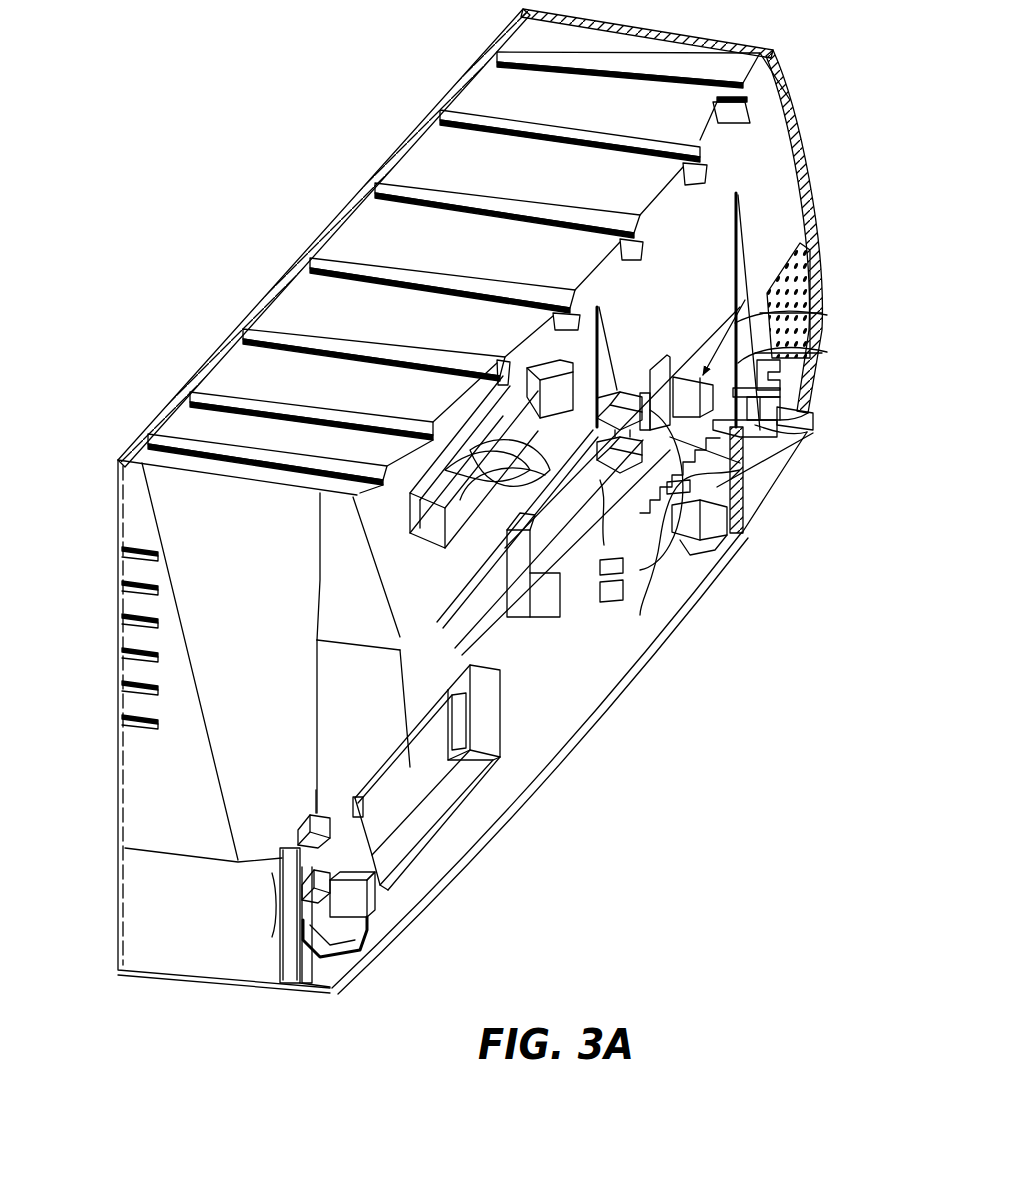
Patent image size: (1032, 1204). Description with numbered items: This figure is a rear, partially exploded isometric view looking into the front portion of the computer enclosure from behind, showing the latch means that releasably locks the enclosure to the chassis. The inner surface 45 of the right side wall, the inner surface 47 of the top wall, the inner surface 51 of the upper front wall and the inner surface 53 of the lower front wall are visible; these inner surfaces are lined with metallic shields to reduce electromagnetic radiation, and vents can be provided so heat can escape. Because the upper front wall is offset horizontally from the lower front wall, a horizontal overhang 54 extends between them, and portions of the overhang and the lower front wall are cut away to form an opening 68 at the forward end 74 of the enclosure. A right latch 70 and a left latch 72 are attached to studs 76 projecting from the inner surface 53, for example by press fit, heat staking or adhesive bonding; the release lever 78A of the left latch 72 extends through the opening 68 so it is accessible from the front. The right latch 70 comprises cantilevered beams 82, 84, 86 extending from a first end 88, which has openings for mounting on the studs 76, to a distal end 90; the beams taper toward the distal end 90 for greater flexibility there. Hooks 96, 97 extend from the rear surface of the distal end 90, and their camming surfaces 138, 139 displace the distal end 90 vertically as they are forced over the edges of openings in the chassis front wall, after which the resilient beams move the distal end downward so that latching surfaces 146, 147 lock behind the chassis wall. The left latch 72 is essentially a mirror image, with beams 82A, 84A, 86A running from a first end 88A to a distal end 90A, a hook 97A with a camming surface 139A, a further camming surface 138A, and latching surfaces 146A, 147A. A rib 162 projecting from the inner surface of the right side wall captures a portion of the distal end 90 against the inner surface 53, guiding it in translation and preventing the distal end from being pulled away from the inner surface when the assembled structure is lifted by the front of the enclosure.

The inner surface of right side wall 45 is at (258, 610).
The inner surface of top wall 47 is at (470, 255).
The inner surface of upper front wall 51 is at (722, 265).
The inner surface of lower front wall 53 is at (548, 729).
The horizontal overhang 54 is at (790, 476).
The opening 68 is at (803, 443).
The right latch 70 is at (437, 862).
The left latch 72 is at (820, 313).
The forward end of enclosure 74 is at (824, 402).
The studs 76 is at (653, 643).
The release lever of left latch 78A is at (820, 353).
The cantilevered beam of right latch 82 is at (425, 725).
The cantilevered beam of left latch 82A is at (530, 362).
The cantilevered beam of right latch 84 is at (430, 815).
The cantilevered beam of left latch 84A is at (500, 435).
The cantilevered beam of right latch 86 is at (395, 893).
The cantilevered beam of left latch 86A is at (505, 522).
The first end of right latch 88 is at (488, 668).
The first end of left latch 88A is at (510, 585).
The distal end of right latch 90 is at (368, 960).
The distal end of left latch 90A is at (741, 510).
The hook 96 is at (308, 816).
The hook 97 is at (280, 870).
The hook of left latch 97A is at (722, 538).
The camming surface 138 is at (283, 860).
The camming surface of left latch hook 138A is at (618, 385).
The camming surface 139 is at (285, 905).
The camming surface of left latch hook 139A is at (587, 590).
The latching surface 146 is at (332, 810).
The latching surface of left latch 146A is at (648, 380).
The latching surface 147 is at (365, 915).
The latching surface of left latch 147A is at (640, 560).
The rib 162 is at (305, 985).